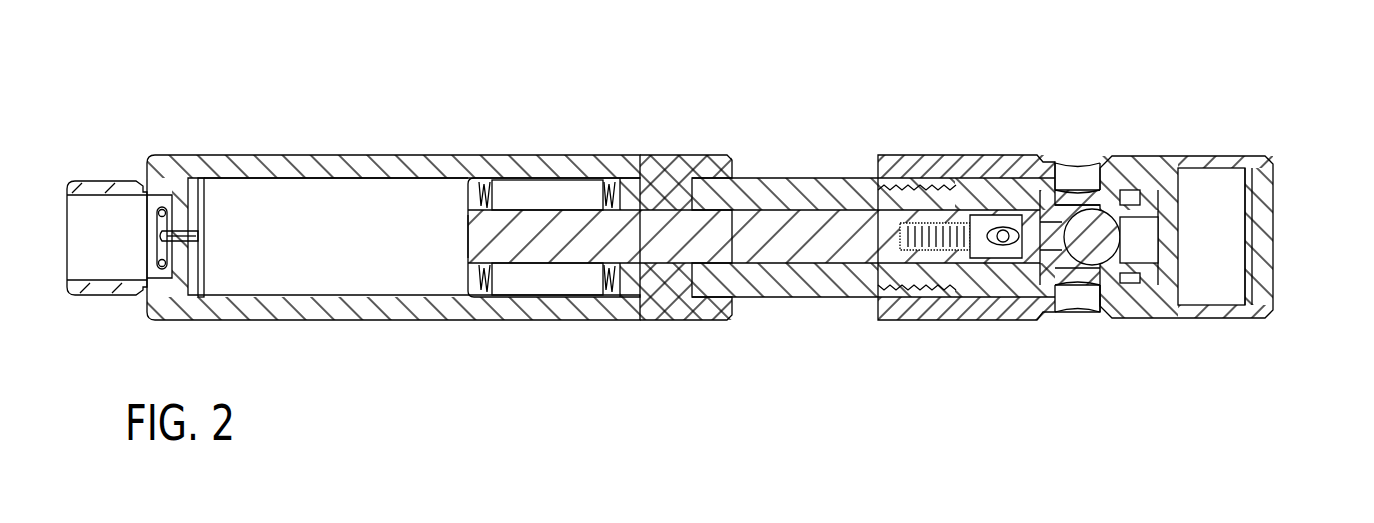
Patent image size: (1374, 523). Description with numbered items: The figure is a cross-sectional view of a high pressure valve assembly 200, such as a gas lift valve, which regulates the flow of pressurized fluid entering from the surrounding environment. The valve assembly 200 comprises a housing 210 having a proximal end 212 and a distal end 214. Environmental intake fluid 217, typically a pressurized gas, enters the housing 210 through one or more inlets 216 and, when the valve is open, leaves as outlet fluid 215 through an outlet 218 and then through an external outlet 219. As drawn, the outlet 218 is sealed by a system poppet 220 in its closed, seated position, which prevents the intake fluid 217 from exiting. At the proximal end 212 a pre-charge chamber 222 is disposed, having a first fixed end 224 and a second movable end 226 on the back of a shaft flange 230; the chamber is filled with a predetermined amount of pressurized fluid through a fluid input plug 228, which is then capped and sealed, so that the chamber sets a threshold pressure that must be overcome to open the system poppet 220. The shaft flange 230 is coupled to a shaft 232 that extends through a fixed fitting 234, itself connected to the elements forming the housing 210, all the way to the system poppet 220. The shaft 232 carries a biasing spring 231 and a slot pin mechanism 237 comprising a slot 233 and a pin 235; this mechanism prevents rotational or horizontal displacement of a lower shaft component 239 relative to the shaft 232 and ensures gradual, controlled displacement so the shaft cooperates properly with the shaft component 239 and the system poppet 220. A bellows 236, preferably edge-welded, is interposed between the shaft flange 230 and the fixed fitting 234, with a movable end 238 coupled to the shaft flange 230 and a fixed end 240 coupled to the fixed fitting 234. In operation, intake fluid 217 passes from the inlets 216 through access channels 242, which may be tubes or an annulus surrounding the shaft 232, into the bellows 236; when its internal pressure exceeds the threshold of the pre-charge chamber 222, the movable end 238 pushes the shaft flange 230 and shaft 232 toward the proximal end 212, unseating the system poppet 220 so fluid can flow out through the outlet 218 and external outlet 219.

The high pressure valve assembly 200 is at (216, 126).
The housing 210 is at (350, 168).
The proximal end 212 is at (65, 302).
The distal end 214 is at (1266, 152).
The outlet fluid 215 is at (1345, 236).
The inlets 216 is at (1090, 176).
The environmental intake fluid 217 is at (1070, 150).
The outlet 218 is at (1145, 252).
The external outlet 219 is at (1265, 272).
The system poppet 220 is at (1105, 232).
The pre-charge chamber 222 is at (362, 270).
The first fixed end 224 is at (201, 320).
The second movable end 226 is at (466, 266).
The fluid input plug 228 is at (158, 224).
The shaft flange 230 is at (480, 192).
The biasing spring 231 is at (935, 255).
The shaft 232 is at (795, 250).
The slot 233 is at (1020, 265).
The fixed fitting 234 is at (658, 322).
The pin 235 is at (1003, 248).
The bellows 236 is at (558, 196).
The slot pin mechanism 237 is at (995, 215).
The movable end 238 is at (500, 296).
The shaft component 239 is at (1043, 322).
The fixed end 240 is at (607, 284).
The access channels 242 is at (618, 300).